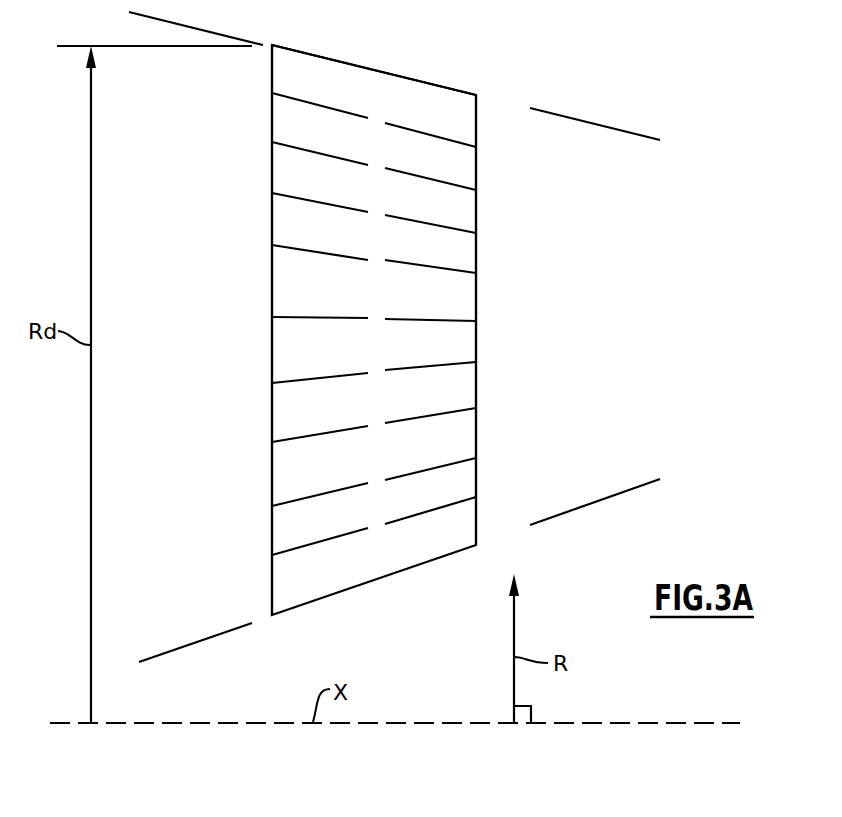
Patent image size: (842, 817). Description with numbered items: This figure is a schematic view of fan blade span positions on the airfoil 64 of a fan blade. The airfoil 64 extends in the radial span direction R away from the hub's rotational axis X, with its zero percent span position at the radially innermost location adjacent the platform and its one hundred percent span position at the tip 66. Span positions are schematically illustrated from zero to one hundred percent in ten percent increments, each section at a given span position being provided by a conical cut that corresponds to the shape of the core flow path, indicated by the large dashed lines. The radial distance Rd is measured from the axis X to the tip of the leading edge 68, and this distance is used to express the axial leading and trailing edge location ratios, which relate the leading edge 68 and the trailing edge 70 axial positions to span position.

The airfoil 64 is at (509, 234).
The tip 66 is at (372, 69).
The leading edge 68 is at (271, 266).
The trailing edge 70 is at (476, 305).